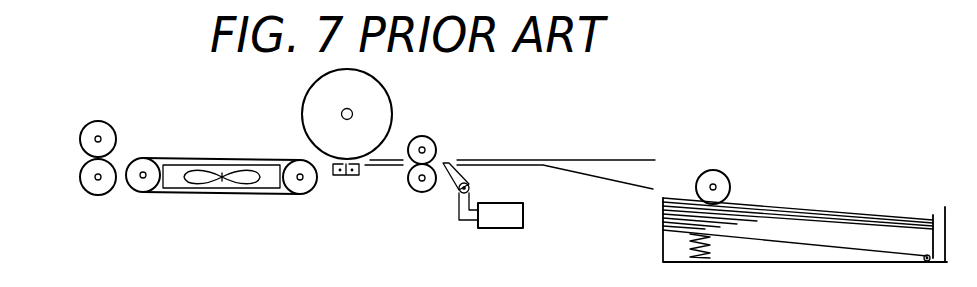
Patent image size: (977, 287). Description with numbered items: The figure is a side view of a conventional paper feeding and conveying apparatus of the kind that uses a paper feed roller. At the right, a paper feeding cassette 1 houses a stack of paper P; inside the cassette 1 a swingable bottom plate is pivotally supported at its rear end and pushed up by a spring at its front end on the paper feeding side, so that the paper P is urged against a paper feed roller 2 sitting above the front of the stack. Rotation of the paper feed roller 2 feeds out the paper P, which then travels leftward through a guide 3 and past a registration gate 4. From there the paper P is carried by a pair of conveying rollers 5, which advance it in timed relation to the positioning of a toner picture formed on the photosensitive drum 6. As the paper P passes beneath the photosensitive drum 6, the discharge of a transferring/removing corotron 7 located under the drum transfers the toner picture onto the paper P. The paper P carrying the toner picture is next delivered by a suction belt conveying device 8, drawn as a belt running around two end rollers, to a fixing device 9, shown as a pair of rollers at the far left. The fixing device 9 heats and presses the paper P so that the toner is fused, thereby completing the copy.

The paper feeding cassette 1 is at (673, 266).
The paper feed roller 2 is at (722, 180).
The guide 3 is at (625, 185).
The registration gate 4 is at (450, 185).
The conveying rollers 5 is at (428, 143).
The photosensitive drum 6 is at (373, 100).
The transferring/removing corotron 7 is at (349, 179).
The suction belt conveying device 8 is at (305, 183).
The fixing device 9 is at (108, 122).
The paper P is at (850, 213).